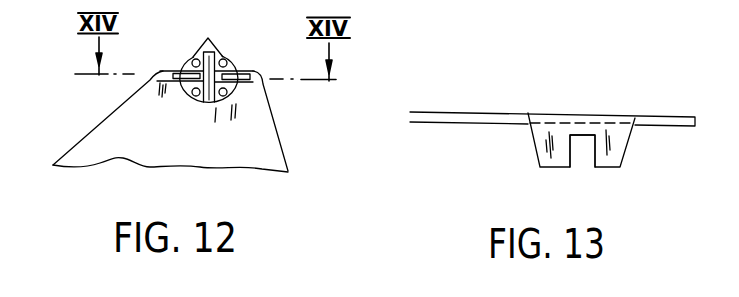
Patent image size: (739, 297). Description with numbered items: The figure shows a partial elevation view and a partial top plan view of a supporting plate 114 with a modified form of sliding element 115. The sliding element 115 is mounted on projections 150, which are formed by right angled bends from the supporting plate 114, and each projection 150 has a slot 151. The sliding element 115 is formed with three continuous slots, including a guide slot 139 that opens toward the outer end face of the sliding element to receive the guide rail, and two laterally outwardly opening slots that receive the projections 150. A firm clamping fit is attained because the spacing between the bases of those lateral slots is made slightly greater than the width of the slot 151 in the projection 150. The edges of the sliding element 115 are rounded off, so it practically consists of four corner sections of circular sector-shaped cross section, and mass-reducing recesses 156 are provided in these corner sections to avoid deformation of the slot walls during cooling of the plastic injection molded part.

In FIG. 12, the supporting plate 114 is at (84, 141).
In FIG. 13, the supporting plate 114 is at (490, 98).
In FIG. 12, the sliding element 115 is at (235, 59).
In FIG. 12, the guide slot 139 is at (207, 102).
In FIG. 12, the projection 150 is at (174, 71).
In FIG. 13, the projection 150 is at (548, 147).
In FIG. 13, the slot 151 is at (582, 160).
In FIG. 12, the mass-reducing recess 156 is at (233, 122).